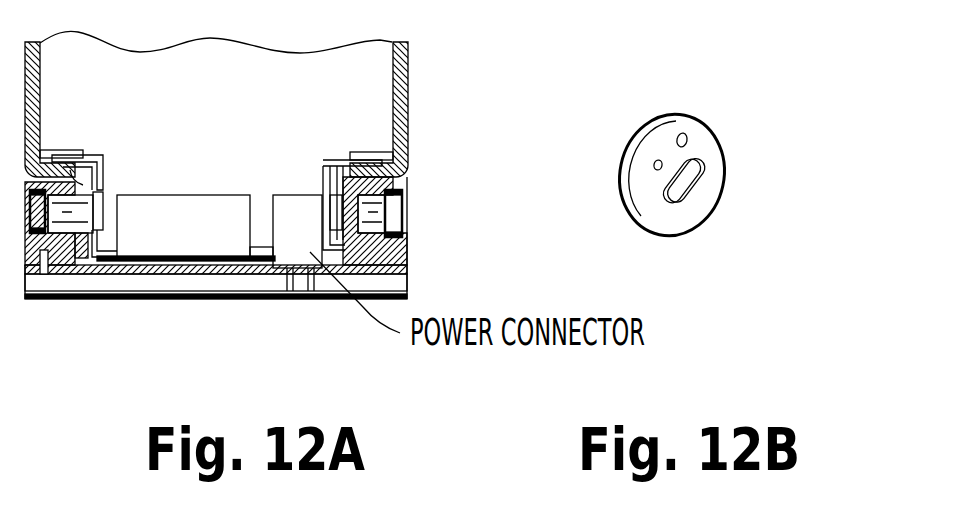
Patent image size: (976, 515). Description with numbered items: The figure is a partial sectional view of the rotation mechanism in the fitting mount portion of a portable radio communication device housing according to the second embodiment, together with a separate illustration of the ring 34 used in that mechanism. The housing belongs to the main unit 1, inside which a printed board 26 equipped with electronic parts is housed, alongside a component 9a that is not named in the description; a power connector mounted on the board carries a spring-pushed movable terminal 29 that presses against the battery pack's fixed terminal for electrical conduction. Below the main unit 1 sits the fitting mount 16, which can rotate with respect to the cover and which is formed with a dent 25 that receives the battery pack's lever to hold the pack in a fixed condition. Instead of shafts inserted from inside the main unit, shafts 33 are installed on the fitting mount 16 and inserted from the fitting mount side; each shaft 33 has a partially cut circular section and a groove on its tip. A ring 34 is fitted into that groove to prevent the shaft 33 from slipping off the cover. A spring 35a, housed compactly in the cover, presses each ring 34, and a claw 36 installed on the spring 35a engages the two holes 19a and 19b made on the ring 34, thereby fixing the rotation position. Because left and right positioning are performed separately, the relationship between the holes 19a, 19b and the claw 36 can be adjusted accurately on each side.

In FIG. 12A, the main unit 1 is at (436, 46).
In FIG. 12A, the fitting mount 16 is at (407, 270).
In FIG. 12A, the shaft 33 is at (407, 202).
In FIG. 12A, the ring 34 is at (348, 218).
In FIG. 12B, the ring 34 is at (690, 187).
In FIG. 12A, the claw 36 is at (108, 187).
In FIG. 12A, the spring 35a is at (337, 160).
In FIG. 12A, the circuit board unit 9a is at (182, 250).
In FIG. 12A, the printed board 26 is at (287, 195).
In FIG. 12A, the movable terminal 29 is at (305, 292).
In FIG. 12A, the dent 25 is at (47, 291).
In FIG. 12B, the hole 19a is at (687, 137).
In FIG. 12B, the hole 19b is at (656, 168).